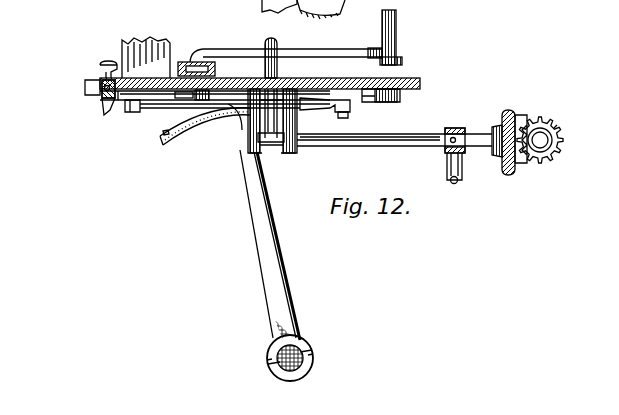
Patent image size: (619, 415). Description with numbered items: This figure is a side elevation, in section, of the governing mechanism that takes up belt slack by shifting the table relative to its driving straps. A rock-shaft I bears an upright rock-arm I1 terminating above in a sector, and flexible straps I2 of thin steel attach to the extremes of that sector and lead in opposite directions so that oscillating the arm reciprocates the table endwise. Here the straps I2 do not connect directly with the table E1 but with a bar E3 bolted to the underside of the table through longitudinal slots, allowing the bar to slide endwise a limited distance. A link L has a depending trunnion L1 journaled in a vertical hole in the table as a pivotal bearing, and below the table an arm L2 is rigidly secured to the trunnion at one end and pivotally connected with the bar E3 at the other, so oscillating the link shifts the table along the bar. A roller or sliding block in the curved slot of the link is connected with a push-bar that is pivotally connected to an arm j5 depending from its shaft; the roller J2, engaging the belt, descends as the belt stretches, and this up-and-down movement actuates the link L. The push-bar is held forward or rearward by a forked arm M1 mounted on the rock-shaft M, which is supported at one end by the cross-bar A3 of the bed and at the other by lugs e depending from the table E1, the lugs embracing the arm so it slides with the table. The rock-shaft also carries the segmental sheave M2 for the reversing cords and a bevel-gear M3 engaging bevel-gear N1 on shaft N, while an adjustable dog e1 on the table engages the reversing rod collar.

The roller J2 is at (326, 12).
The arm j5 is at (396, 24).
The link L is at (216, 66).
The forked arm M1 is at (278, 64).
The dog e1 is at (100, 103).
The table E1 is at (418, 82).
The flexible straps I2 is at (190, 102).
The bar E3 is at (362, 96).
The lugs e is at (262, 152).
The trunnion L1 is at (204, 98).
The arm L2 is at (228, 110).
The rock-shaft M is at (362, 146).
The segmental wheel or sheave M2 is at (460, 178).
The cross-bar A3 is at (504, 116).
The bevel-gear M3 is at (518, 114).
The shaft N is at (548, 140).
The bevel-gear N1 is at (556, 128).
The rock-arm I1 is at (276, 288).
The rock-shaft I is at (270, 350).